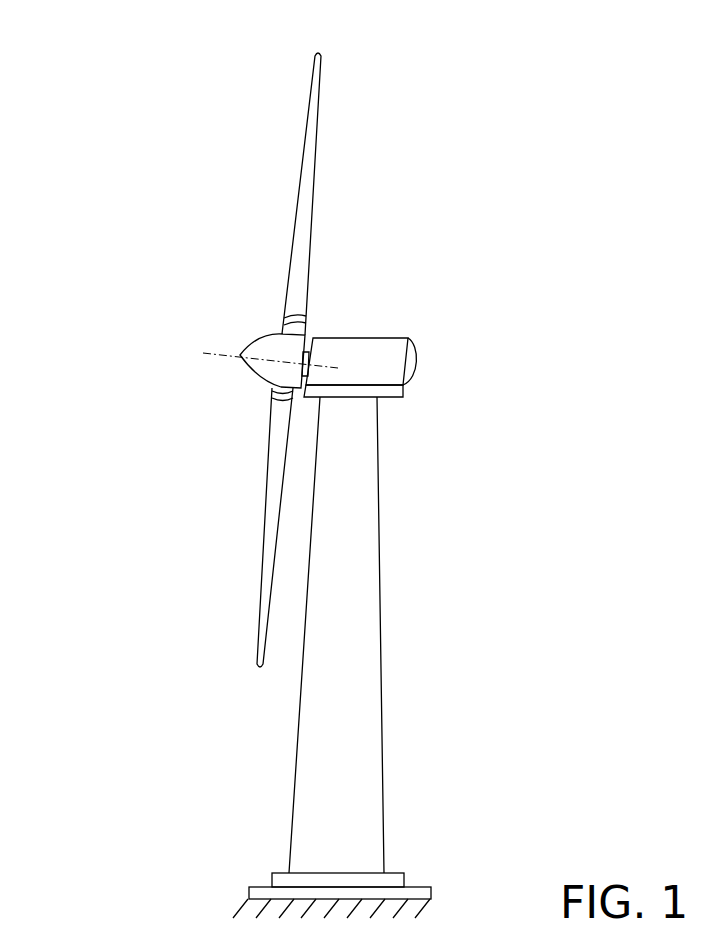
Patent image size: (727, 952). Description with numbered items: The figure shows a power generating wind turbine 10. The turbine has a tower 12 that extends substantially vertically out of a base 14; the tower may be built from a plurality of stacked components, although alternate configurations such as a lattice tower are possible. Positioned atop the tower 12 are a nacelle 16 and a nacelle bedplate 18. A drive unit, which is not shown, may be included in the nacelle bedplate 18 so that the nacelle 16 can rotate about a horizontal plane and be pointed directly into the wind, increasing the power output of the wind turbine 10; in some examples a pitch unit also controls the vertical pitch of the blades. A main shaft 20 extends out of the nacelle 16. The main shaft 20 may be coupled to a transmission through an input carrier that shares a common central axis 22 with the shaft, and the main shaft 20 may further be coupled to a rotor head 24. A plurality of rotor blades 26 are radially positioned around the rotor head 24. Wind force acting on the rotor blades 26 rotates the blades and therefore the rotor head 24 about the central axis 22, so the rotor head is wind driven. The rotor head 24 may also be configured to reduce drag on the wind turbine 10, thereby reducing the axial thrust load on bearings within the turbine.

The power generating wind turbine 10 is at (95, 40).
The tower 12 is at (380, 468).
The base 14 is at (418, 884).
The nacelle 16 is at (378, 342).
The nacelle bedplate 18 is at (403, 393).
The main shaft 20 is at (308, 363).
The central axis 22 is at (233, 353).
The rotor head 24 is at (267, 337).
The rotor blades 26 is at (290, 266).